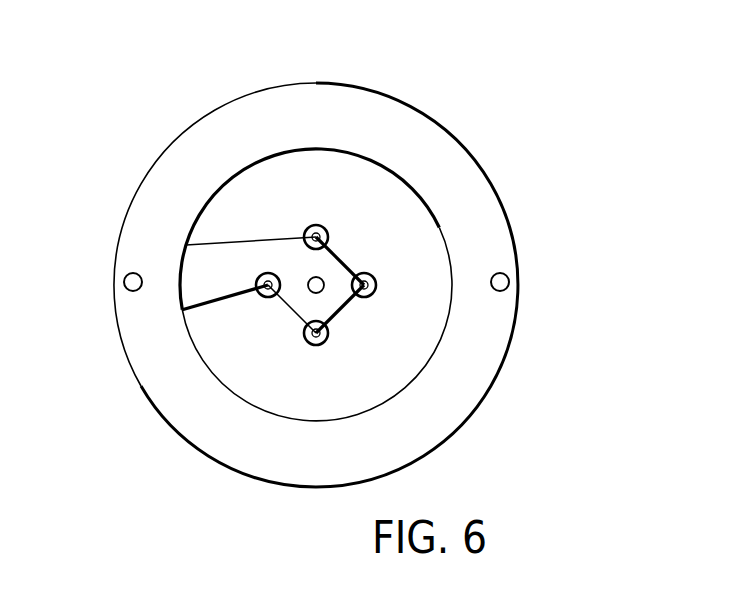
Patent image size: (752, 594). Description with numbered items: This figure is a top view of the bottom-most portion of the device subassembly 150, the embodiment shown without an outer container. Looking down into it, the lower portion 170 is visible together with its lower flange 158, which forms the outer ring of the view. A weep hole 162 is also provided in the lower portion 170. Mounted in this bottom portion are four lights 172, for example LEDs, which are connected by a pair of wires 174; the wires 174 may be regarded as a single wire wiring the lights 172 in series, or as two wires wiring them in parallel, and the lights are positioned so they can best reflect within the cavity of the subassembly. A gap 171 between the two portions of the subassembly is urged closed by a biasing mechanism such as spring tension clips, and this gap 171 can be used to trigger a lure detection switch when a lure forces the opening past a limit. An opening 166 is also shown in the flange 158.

The device subassembly 150 is at (133, 97).
The lower portion 170 is at (447, 128).
The lower flange 158 is at (507, 258).
The gap 171 is at (508, 280).
The weep hole 162 is at (641, 287).
The mounting aperture 166 is at (133, 304).
The wires 174 is at (207, 242).
The lights 172 is at (315, 226).